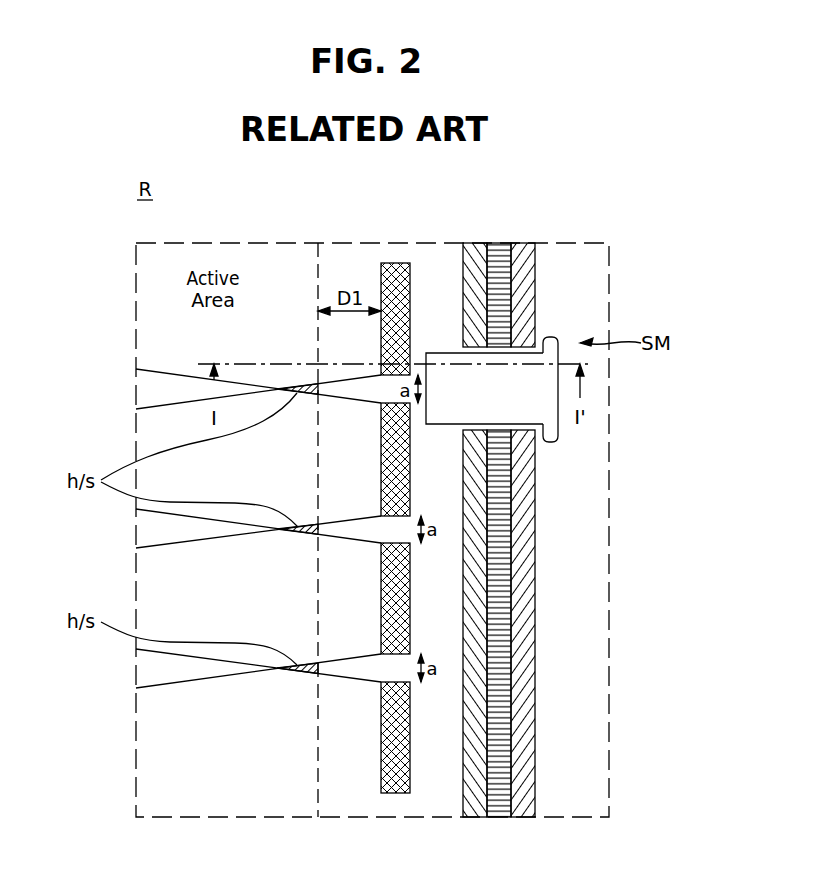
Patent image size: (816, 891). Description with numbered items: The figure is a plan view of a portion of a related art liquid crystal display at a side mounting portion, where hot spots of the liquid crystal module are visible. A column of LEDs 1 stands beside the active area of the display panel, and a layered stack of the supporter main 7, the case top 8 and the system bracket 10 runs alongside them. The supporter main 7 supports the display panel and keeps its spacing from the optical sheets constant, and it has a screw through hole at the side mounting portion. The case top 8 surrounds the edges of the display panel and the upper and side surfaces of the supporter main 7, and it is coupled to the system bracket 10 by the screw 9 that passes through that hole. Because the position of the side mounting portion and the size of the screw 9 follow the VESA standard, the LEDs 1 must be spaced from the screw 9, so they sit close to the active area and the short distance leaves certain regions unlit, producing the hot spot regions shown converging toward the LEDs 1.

The LED 1 is at (393, 263).
The supporter main 7 is at (477, 250).
The case top 8 is at (500, 253).
The screw 9 is at (552, 428).
The system bracket 10 is at (522, 250).